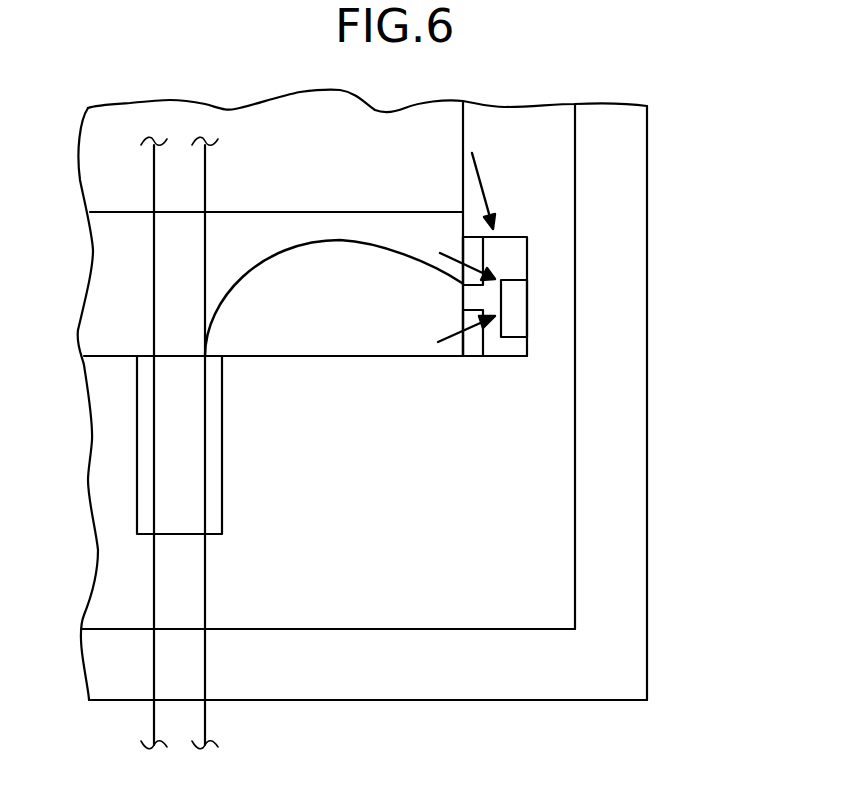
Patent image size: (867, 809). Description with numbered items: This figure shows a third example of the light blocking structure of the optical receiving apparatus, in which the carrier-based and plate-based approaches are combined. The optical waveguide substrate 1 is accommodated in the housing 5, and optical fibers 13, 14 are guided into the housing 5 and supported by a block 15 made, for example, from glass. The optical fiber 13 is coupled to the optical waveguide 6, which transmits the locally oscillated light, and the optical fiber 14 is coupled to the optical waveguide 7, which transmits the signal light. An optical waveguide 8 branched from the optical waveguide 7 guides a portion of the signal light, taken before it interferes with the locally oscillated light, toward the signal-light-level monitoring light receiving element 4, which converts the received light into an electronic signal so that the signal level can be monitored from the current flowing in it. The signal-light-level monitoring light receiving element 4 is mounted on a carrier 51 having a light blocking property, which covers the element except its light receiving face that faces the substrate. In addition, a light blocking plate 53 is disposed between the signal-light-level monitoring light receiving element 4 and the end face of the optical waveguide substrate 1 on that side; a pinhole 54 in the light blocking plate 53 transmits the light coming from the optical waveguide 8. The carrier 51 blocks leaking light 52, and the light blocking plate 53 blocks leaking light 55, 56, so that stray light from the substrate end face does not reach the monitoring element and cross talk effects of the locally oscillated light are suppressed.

The optical waveguide substrate 1 is at (463, 128).
The signal-light-level monitoring light receiving element 4 is at (515, 337).
The housing 5 is at (647, 592).
The optical waveguide 6 is at (152, 175).
The optical waveguide 7 is at (207, 183).
The optical waveguide 8 is at (338, 240).
The optical fiber 13 is at (152, 720).
The optical fiber 14 is at (207, 720).
The block 15 is at (138, 462).
The carrier 51 is at (513, 253).
The light 52 is at (483, 190).
The light blocking plate 53 is at (470, 358).
The pinhole 54 is at (473, 287).
The light 55 is at (516, 237).
The light 56 is at (476, 358).